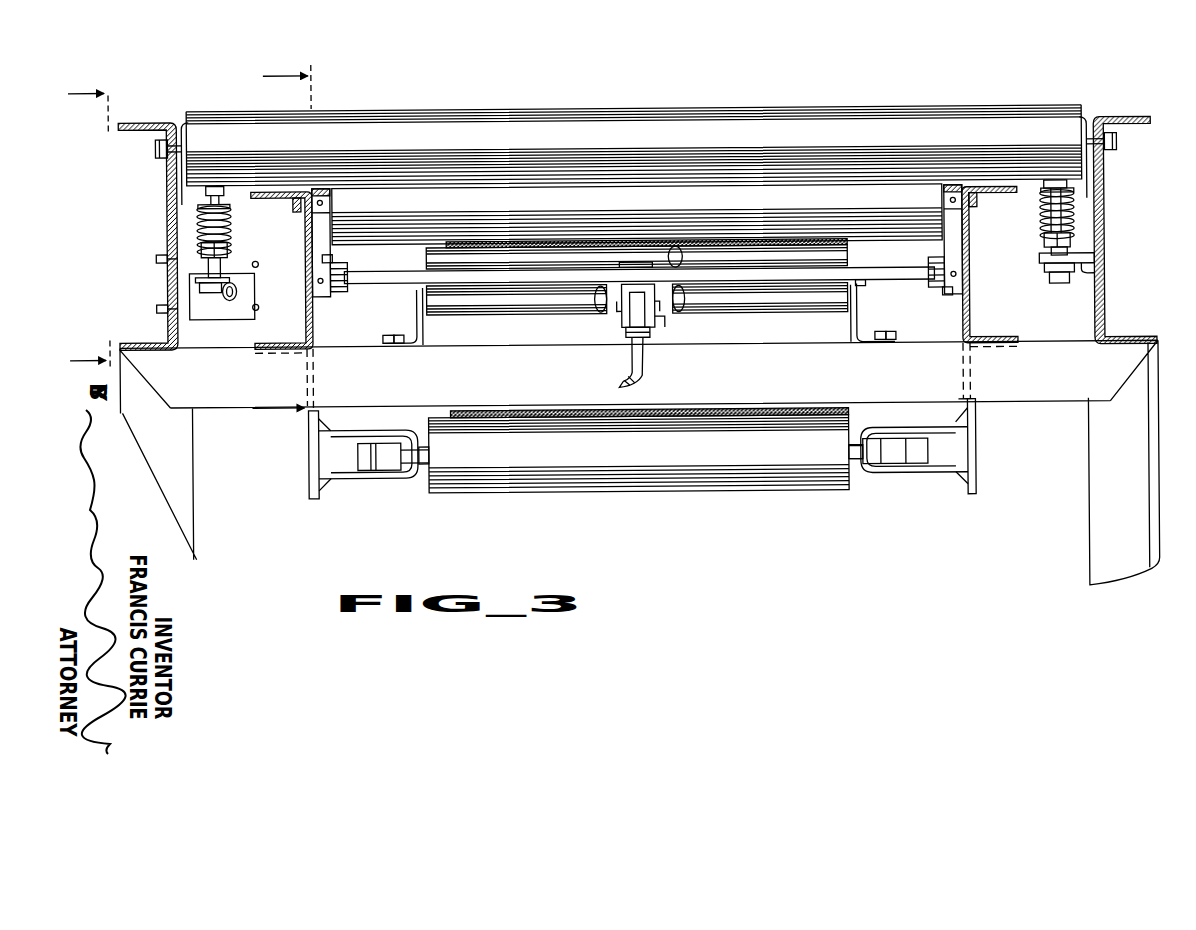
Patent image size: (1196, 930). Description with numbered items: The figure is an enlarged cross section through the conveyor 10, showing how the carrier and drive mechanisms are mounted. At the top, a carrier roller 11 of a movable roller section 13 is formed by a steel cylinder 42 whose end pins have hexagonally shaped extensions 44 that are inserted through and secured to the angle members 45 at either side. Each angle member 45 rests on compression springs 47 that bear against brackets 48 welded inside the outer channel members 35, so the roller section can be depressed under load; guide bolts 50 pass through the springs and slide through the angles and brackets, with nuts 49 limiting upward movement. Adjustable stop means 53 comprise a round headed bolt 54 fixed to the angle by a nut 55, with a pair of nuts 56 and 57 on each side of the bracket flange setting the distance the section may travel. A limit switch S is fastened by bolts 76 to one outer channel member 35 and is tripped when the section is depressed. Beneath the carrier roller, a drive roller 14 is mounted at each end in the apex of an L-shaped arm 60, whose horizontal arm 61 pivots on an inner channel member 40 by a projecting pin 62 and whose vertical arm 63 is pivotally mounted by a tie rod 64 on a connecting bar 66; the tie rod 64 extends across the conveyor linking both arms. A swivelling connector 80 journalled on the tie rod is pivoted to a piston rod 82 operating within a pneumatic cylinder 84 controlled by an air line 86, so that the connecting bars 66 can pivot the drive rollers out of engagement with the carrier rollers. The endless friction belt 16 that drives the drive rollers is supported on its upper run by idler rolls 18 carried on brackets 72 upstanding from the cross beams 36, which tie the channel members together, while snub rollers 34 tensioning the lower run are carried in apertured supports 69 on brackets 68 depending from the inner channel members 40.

The conveyor 10 is at (780, 64).
The carrier rollers 11 is at (685, 148).
The movable roller section 13 is at (633, 117).
The drive rollers 14 is at (590, 214).
The endless friction belt 16 is at (632, 246).
The idler rolls 18 is at (550, 310).
The snub rollers 34 is at (626, 460).
The outer channel members 35 is at (168, 176).
The cross beams 36 is at (462, 388).
The inner channel members 40 is at (313, 328).
The steel cylinders 42 is at (808, 114).
The hexagonally shaped extensions 44 is at (157, 150).
The angle members 45 is at (182, 147).
The compression springs 47 is at (198, 226).
The brackets 48 is at (190, 291).
The nuts 49 is at (196, 281).
The guide bolts 50 is at (198, 240).
The adjustable stop means 53 is at (200, 208).
The round headed bolt 54 is at (222, 298).
The nut 55 is at (232, 209).
The nut 56 is at (232, 246).
The nut 57 is at (222, 281).
The L-shaped arm 60 is at (331, 251).
The horizontal arm 61 is at (326, 204).
The projecting pin 62 is at (298, 211).
The vertical arm 63 is at (322, 259).
The tie rod 64 is at (366, 287).
The connecting bar 66 is at (343, 294).
The brackets 68 is at (308, 472).
The apertured supports 69 is at (357, 478).
The brackets 72 is at (420, 337).
The bolts 76 is at (157, 259).
The swivelling connector 80 is at (656, 326).
The piston rod 82 is at (632, 310).
The pneumatic cylinder 84 is at (652, 333).
The air line 86 is at (646, 370).
The limit switch S is at (235, 312).